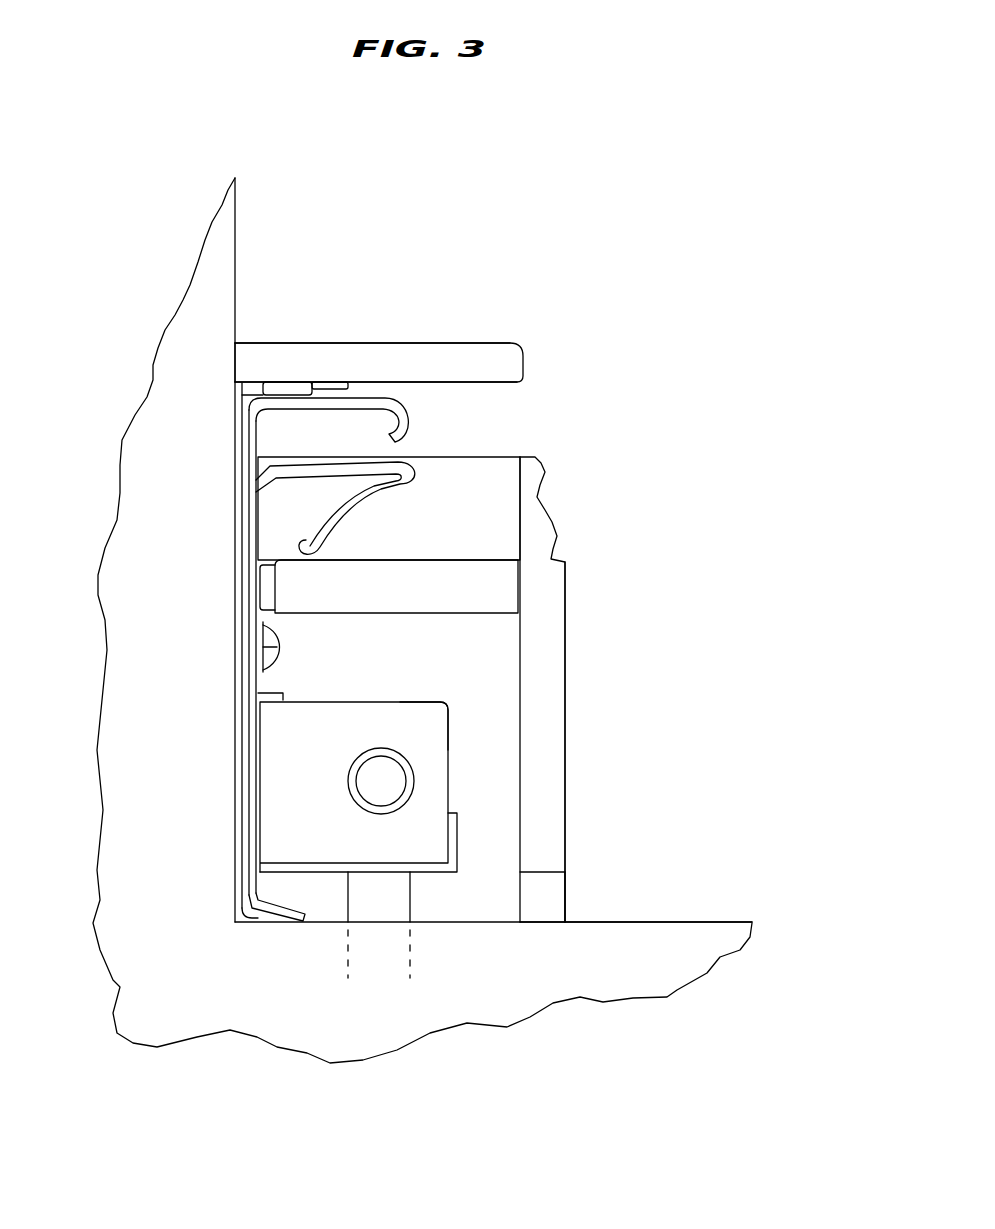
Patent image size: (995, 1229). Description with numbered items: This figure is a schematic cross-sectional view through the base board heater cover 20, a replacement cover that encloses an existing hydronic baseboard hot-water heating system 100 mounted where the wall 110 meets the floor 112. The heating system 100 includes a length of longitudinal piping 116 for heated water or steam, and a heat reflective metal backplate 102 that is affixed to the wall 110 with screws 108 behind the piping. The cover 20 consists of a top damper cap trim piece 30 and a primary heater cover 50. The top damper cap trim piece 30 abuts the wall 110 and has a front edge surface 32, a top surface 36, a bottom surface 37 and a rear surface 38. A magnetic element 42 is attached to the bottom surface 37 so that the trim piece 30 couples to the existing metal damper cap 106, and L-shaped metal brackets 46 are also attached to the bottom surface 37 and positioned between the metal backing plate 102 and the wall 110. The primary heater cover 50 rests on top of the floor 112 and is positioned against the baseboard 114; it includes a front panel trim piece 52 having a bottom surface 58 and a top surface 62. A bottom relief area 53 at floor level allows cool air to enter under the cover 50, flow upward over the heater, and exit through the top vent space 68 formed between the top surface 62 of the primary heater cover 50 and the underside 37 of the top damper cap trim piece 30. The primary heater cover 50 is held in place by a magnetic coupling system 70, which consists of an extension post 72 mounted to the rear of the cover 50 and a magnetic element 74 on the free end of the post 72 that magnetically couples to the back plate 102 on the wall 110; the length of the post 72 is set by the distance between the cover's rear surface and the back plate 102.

The base board heater cover 20 is at (765, 229).
The top damper cap trim piece 30 is at (457, 318).
The front edge surface 32 is at (525, 358).
The top surface 36 is at (392, 343).
The bottom surface 37 is at (458, 384).
The rear surface 38 is at (235, 358).
The magnetic element 42 is at (290, 385).
The L-shaped metal brackets 46 is at (338, 383).
The primary heater cover 50 is at (590, 727).
The front panel trim piece 52 is at (567, 862).
The bottom relief area 53 is at (587, 894).
The bottom surface 58 is at (552, 925).
The top surface 62 is at (468, 535).
The top vent space 68 is at (553, 383).
The magnetic coupling system 70 is at (541, 476).
The extension post 72 is at (470, 590).
The magnetic element 74 is at (262, 587).
The hydronic baseboard hot-water heating system 100 is at (477, 791).
The heat reflective metal backplate 102 is at (252, 537).
The damper cap 106 is at (400, 447).
The screws 108 is at (278, 657).
The wall 110 is at (237, 200).
The floor 112 is at (735, 921).
The baseboard 114 is at (445, 718).
The longitudinal piping 116 is at (412, 905).